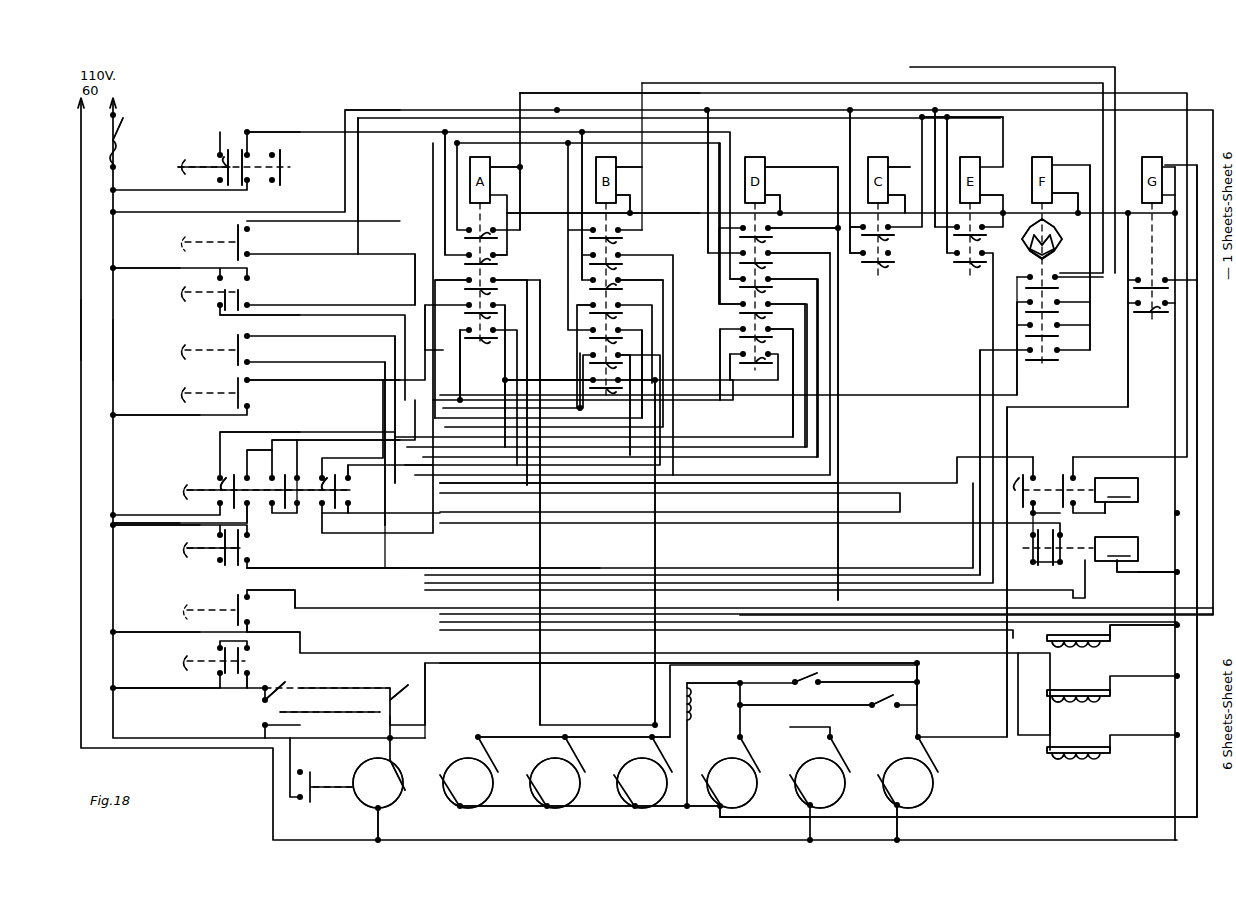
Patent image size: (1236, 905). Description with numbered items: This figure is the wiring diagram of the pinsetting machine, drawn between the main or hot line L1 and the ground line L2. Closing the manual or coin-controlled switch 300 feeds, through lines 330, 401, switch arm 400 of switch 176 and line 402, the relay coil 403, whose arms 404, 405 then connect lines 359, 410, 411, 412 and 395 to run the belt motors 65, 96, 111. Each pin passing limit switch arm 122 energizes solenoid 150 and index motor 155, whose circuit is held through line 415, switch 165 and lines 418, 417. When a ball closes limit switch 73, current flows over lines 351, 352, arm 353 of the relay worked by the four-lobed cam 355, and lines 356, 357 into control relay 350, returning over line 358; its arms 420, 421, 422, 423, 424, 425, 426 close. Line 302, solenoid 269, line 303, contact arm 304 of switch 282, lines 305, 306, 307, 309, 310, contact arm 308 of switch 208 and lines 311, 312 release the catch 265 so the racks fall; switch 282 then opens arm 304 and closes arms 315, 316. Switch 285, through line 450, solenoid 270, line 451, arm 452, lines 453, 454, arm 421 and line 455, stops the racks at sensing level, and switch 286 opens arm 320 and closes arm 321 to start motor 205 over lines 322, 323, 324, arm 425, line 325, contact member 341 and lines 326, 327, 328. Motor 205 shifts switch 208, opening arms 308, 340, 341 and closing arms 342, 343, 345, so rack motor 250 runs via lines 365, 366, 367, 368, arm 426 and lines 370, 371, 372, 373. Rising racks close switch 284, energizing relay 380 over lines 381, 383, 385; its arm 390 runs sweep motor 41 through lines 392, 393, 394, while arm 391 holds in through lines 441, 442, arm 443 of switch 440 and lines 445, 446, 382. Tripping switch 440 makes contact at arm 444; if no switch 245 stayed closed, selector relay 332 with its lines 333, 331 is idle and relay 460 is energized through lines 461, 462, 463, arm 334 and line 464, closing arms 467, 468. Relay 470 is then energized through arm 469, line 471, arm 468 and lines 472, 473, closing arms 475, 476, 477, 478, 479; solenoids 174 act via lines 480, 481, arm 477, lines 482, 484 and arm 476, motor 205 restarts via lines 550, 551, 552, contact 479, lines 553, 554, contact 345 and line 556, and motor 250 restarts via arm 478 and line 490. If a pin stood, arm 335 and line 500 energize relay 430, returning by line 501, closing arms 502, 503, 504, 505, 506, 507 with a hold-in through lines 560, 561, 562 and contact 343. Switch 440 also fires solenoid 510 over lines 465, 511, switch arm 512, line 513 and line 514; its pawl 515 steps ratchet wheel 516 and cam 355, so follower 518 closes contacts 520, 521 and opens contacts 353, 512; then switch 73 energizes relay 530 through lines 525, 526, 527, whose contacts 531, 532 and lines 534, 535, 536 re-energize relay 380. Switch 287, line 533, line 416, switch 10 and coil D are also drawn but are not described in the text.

The fuse 300 is at (138, 129).
The pushbutton switch 282 is at (200, 150).
The contact 304 is at (234, 159).
The contact 305 is at (257, 159).
The conductor 306 is at (285, 126).
The contact 316 is at (298, 167).
The pushbutton actuator 315 is at (204, 177).
The conductor 395 is at (690, 220).
The conductor 382 is at (699, 169).
The conductor 484 is at (427, 193).
The conductor 303 is at (699, 428).
The pushbutton switch 284 is at (212, 237).
The conductor 322 is at (146, 257).
The pushbutton switch 286 is at (158, 289).
The contact 320 is at (205, 293).
The contact 321 is at (259, 299).
The conductor 323 is at (469, 320).
The conductor 383 is at (462, 297).
The supply line L2 is at (623, 568).
The supply line L1 is at (126, 350).
The pushbutton switch 285 is at (171, 338).
The conductor 453 is at (378, 409).
The contact 452 is at (260, 350).
The conductor 451 is at (657, 510).
The pushbutton switch 287 is at (161, 387).
The conductor 551 is at (323, 389).
The conductor 550 is at (156, 427).
The conductor 310 is at (453, 425).
The conductor 366 is at (531, 354).
The conductor 562 is at (535, 362).
The selector switch 208 is at (258, 472).
The contact 308 is at (234, 472).
The contact 343 is at (279, 480).
The contact 325 is at (306, 477).
The contact 341 is at (334, 473).
The conductor 554 is at (362, 475).
The conductor 312 is at (146, 506).
The switch actuator 311 is at (198, 495).
The contact 340 is at (250, 484).
The contact 342 is at (250, 499).
The contact 345 is at (356, 491).
The conductor 533 is at (365, 504).
The conductor 365 is at (266, 516).
The conductor 556 is at (471, 522).
The conductor 441 is at (156, 533).
The contact 442 is at (206, 544).
The contact 444 is at (260, 547).
The conductor 445 is at (614, 425).
The pushbutton switch 440 is at (163, 550).
The switch actuator 443 is at (213, 552).
The conductor 326 is at (372, 546).
The conductor 465 is at (535, 565).
The conductor 351 is at (156, 617).
The switch 73 is at (221, 608).
The conductor 352 is at (622, 472).
The conductor 471 is at (673, 602).
The switch 176 is at (168, 654).
The contact 469 is at (205, 653).
The contact 400 is at (266, 660).
The conductor 330 is at (156, 677).
The conductor 401 is at (271, 678).
The limit switch 245 is at (320, 698).
The conductor 331 is at (711, 661).
The switch 10 is at (381, 713).
The switch contact 327 is at (377, 766).
The motor 205 is at (378, 783).
The conductor 328 is at (353, 824).
The conductor 472 is at (853, 258).
The conductor 473 is at (505, 153).
The relay coil A 470 is at (494, 180).
The conductor 359 is at (824, 206).
The relay contact 475 is at (493, 246).
The conductor 455 is at (535, 210).
The relay contact 476 is at (466, 266).
The conductor 367 is at (498, 328).
The conductor 482 is at (452, 292).
The conductor 481 is at (773, 479).
The relay contact 477 is at (485, 298).
The conductor 372 is at (669, 514).
The relay contact 478 is at (473, 321).
The conductor 553 is at (512, 376).
The relay contact 479 is at (482, 350).
The conductor 490 is at (426, 339).
The conductor 552 is at (477, 365).
The conductor 368 is at (549, 370).
The conductor 324 is at (536, 396).
The conductor 307 is at (595, 206).
The conductor 357 is at (629, 154).
The relay coil B 350 is at (619, 180).
The conductor 356 is at (846, 183).
The conductor 358 is at (642, 204).
The relay contact 420 is at (623, 241).
The relay contact 421 is at (617, 266).
The relay contact 309 is at (619, 289).
The conductor 422 is at (594, 297).
The relay contact 423 is at (621, 315).
The relay contact 424 is at (622, 341).
The relay contact 425 is at (623, 371).
The relay contact 426 is at (622, 393).
The relay coil D is at (756, 171).
The relay coil D 430 is at (801, 176).
The conductor 500 is at (881, 383).
The conductor 501 is at (791, 204).
The relay contact 502 is at (768, 239).
The conductor 560 is at (803, 237).
The relay contact 503 is at (769, 266).
The conductor 561 is at (705, 203).
The conductor 385 is at (707, 270).
The relay contact 504 is at (768, 298).
The conductor 454 is at (707, 358).
The relay contact 505 is at (769, 317).
The relay contact 506 is at (769, 343).
The conductor 370 is at (710, 367).
The relay contact 507 is at (755, 371).
The conductor 525 is at (614, 427).
The conductor 371 is at (654, 552).
The conductor 416 is at (713, 673).
The solenoid 150 is at (709, 704).
The switch 122 is at (797, 673).
The conductor 418 is at (885, 682).
The conductor 415 is at (806, 714).
The conductor 417 is at (930, 672).
The switch 165 is at (892, 713).
The conductor 412 is at (792, 573).
The conductor 411 is at (848, 587).
The conductor 373 is at (765, 819).
The conductor 392 is at (917, 822).
The conductor 393 is at (1002, 473).
The motor 65 is at (468, 783).
The motor 96 is at (555, 783).
The motor 111 is at (642, 783).
The motor 155 is at (732, 783).
The motor 250 is at (820, 783).
The motor 41 is at (908, 783).
The conductor 536 is at (864, 181).
The conductor 526 is at (1016, 193).
The conductor 446 is at (949, 185).
The relay coil G 403 is at (1156, 166).
The conductor 402 is at (1216, 475).
The conductor 513 is at (1084, 252).
The conductor 534 is at (887, 199).
The relay coil C 530 is at (889, 180).
The conductor 527 is at (894, 203).
The relay coil E 380 is at (985, 180).
The conductor 381 is at (1006, 193).
The relay coil F 510 is at (1056, 180).
The conductor 514 is at (1065, 203).
The relay contact 535 is at (860, 218).
The timer contact 516 is at (1048, 234).
The timer 355 is at (1062, 237).
The relay contact 531 is at (887, 248).
The conductor 394 is at (934, 182).
The relay contact 390 is at (978, 243).
The conductor 515 is at (1019, 324).
The timer contact 518 is at (1058, 256).
The conductor 410 is at (1143, 309).
The relay contact 405 is at (1155, 273).
The conductor 532 is at (870, 272).
The relay contact 391 is at (961, 277).
The relay contact 353 is at (1055, 289).
The relay contact 404 is at (1151, 324).
The relay contact 520 is at (1035, 304).
The relay contact 521 is at (1052, 339).
The conductor 511 is at (967, 454).
The relay contact 512 is at (1047, 368).
The contact 467 is at (1016, 481).
The contact 468 is at (1052, 481).
The relay 460 is at (1116, 490).
The conductor 461 is at (1147, 531).
The conductor 463 is at (1016, 519).
The conductor 462 is at (1116, 514).
The contact 335 is at (1074, 542).
The contact 334 is at (1017, 547).
The relay 332 is at (1116, 549).
The conductor 464 is at (1028, 561).
The conductor 333 is at (1157, 561).
The solenoid 265 is at (1078, 628).
The conductor 302 is at (1143, 635).
The solenoid coil 269 is at (1094, 653).
The conductor 450 is at (1108, 691).
The solenoid coil 270 is at (1094, 709).
The conductor 480 is at (1104, 749).
The solenoid coil 174 is at (1094, 765).